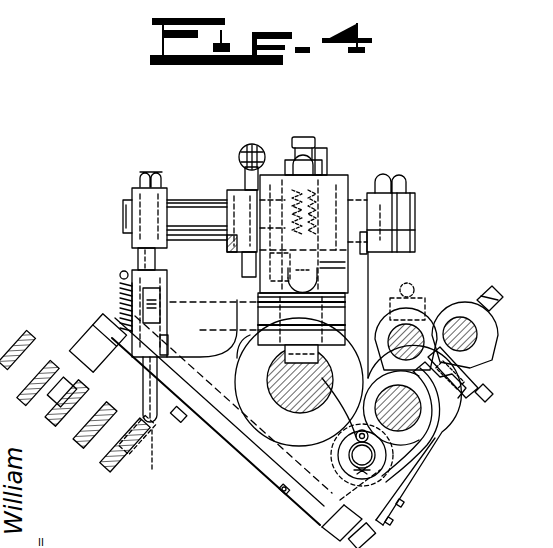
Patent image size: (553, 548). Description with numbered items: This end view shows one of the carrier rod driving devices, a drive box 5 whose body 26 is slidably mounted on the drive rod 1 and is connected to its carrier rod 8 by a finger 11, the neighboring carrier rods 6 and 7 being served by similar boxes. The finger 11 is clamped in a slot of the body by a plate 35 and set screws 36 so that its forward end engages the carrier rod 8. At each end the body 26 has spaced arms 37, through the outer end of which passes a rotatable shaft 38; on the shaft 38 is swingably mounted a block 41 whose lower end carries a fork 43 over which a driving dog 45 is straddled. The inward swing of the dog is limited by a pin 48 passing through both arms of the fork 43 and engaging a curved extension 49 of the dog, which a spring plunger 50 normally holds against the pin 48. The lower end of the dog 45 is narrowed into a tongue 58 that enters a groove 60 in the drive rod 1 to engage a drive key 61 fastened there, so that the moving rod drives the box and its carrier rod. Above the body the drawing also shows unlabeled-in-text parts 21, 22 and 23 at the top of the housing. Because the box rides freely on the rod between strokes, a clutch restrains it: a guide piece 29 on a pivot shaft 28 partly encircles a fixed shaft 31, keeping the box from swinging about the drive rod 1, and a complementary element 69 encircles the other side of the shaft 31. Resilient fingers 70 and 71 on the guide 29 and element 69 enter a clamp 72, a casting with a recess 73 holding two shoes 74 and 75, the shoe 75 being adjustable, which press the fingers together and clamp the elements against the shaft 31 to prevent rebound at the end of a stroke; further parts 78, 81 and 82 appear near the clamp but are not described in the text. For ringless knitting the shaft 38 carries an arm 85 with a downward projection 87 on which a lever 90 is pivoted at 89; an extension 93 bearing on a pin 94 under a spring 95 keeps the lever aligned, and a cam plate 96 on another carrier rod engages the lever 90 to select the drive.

The drive rod 1 is at (282, 405).
The drive box 5 is at (396, 290).
The carrier rod 6 is at (118, 468).
The carrier rod 7 is at (90, 447).
The carrier rod 8 is at (62, 432).
The finger 11 is at (104, 330).
The adjusting knob 21 is at (282, 160).
The hand wheel 22 is at (252, 144).
The bearing block 23 is at (248, 180).
The body 26 is at (253, 405).
The pivot shaft 28 is at (372, 462).
The guide piece 29 is at (410, 443).
The fixed shaft 31 is at (420, 409).
The plate 35 is at (265, 462).
The set screws 36 is at (183, 420).
The arms 37 is at (256, 278).
The rotatable shaft 38 is at (200, 215).
The block 41 is at (348, 178).
The fork 43 is at (299, 382).
The driving dog 45 is at (262, 317).
The pin 48 is at (371, 283).
The curved extensions 49 is at (265, 280).
The spring plunger 50 is at (300, 280).
The tongue 58 is at (288, 362).
The groove 60 is at (284, 388).
The drive key 61 is at (276, 368).
The complementary element 69 is at (428, 420).
The resilient finger 70 is at (448, 330).
The resilient finger 71 is at (442, 440).
The clamp 72 is at (498, 336).
The recess 73 is at (478, 356).
The shoe 74 is at (430, 335).
The shoe 75 is at (470, 370).
The nut 78 is at (482, 316).
The shaft 81 is at (480, 333).
The shaft 82 is at (407, 335).
The arm 85 is at (132, 192).
The projection 87 is at (140, 278).
The pivot 89 is at (168, 350).
The lever 90 is at (145, 386).
The extension 93 is at (150, 296).
The pin 94 is at (128, 305).
The spring 95 is at (128, 290).
The cam plate 96 is at (256, 262).